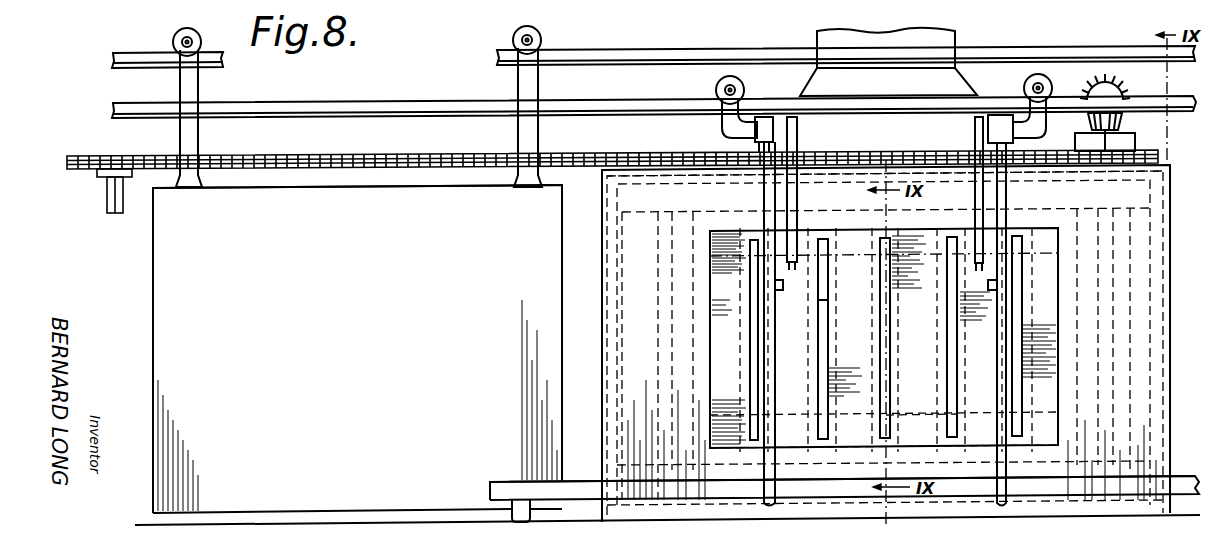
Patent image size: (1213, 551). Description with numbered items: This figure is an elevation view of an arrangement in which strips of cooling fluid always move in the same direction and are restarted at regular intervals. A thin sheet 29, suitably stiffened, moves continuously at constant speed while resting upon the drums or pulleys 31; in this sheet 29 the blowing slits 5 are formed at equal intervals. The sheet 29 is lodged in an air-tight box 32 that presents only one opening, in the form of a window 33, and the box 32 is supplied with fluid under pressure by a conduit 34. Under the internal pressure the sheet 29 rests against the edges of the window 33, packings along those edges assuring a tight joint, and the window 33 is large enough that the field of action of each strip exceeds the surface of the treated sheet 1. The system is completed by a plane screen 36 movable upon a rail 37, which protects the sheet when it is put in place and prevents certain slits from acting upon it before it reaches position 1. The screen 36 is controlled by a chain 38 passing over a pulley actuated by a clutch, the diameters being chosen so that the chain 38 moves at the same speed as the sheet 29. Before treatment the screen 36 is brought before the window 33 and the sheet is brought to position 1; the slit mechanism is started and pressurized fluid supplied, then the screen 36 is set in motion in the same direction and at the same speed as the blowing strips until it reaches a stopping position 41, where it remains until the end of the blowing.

The treated sheet 1 is at (905, 418).
The blowing slits 5 is at (752, 297).
The thin sheet 29 is at (839, 323).
The drums or pulleys 31 is at (1058, 204).
The air-tight box 32 is at (1170, 312).
The window 33 is at (884, 338).
The conduit 34 is at (913, 40).
The plane screen 36 is at (329, 190).
The rail 37 is at (573, 55).
The chain 38 is at (251, 157).
The stopping position 41 is at (357, 349).